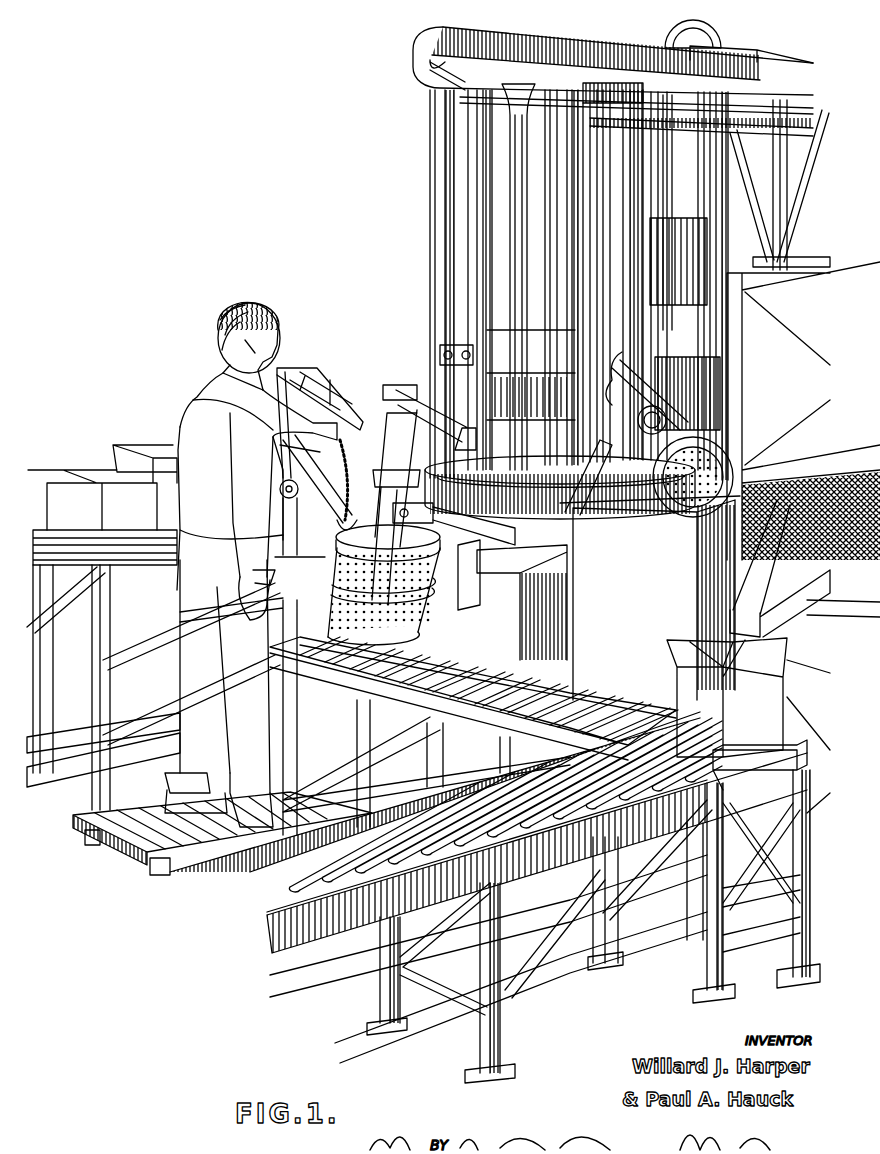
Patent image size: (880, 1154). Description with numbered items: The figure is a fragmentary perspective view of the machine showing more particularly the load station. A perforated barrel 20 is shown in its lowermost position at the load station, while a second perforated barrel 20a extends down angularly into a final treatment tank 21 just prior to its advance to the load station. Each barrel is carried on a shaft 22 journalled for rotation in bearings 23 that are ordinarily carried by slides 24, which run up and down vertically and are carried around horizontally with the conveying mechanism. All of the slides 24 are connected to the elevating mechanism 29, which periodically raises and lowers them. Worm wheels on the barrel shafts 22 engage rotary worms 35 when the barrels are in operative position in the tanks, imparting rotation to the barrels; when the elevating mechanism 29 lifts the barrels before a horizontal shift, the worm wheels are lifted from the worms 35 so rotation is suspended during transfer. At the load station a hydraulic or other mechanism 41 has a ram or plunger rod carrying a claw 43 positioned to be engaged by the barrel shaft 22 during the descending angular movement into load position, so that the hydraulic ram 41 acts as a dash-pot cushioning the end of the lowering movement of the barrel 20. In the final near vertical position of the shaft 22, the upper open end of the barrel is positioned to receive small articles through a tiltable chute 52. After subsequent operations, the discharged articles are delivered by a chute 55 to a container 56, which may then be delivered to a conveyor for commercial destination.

The perforated barrel 20 is at (423, 632).
The second perforated barrel 20a is at (702, 472).
The final treatment tank 21 is at (640, 578).
The barrel shaft 22 is at (400, 498).
The bearing 23 is at (387, 432).
The slide 24 is at (443, 372).
The elevating mechanism 29 is at (693, 392).
The rotary worm 35 is at (690, 437).
The hydraulic mechanism 41 is at (505, 548).
The claw 43 is at (470, 560).
The tiltable chute 52 is at (348, 475).
The chute 55 is at (790, 583).
The container 56 is at (747, 710).